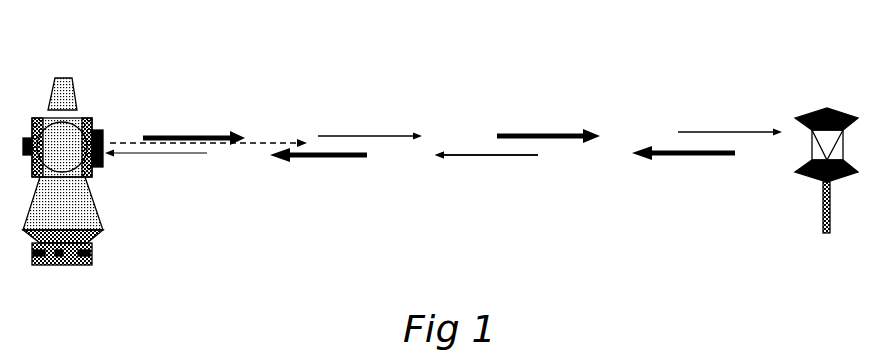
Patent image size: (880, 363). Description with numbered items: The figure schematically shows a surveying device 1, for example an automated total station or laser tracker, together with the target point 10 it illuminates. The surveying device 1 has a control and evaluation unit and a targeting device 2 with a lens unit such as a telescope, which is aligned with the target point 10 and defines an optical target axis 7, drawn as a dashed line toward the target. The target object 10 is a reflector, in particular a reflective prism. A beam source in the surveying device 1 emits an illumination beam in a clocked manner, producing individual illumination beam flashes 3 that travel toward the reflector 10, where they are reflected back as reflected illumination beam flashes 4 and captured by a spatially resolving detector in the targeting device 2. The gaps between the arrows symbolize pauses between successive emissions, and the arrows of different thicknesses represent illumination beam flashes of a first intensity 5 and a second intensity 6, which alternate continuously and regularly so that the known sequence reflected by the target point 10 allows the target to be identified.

The surveying device 1 is at (62, 65).
The targeting device 2 is at (78, 133).
The illumination beam flash 3 is at (528, 117).
The reflected illumination beam flash 4 is at (497, 167).
The first intensity 5 is at (210, 138).
The second intensity 6 is at (363, 136).
The optical target axis 7 is at (110, 143).
The target point 10 is at (820, 92).